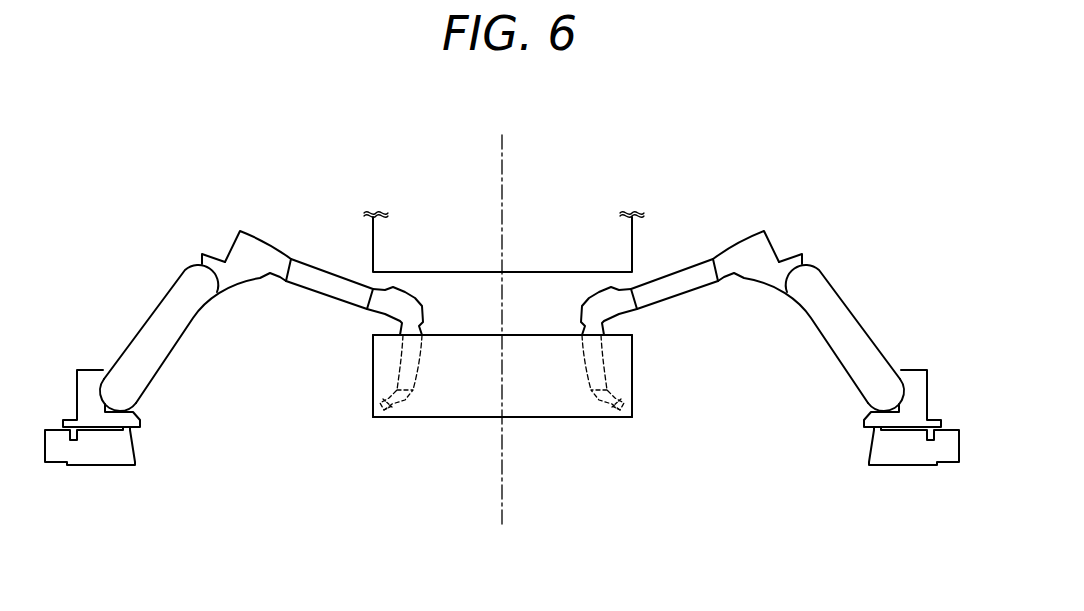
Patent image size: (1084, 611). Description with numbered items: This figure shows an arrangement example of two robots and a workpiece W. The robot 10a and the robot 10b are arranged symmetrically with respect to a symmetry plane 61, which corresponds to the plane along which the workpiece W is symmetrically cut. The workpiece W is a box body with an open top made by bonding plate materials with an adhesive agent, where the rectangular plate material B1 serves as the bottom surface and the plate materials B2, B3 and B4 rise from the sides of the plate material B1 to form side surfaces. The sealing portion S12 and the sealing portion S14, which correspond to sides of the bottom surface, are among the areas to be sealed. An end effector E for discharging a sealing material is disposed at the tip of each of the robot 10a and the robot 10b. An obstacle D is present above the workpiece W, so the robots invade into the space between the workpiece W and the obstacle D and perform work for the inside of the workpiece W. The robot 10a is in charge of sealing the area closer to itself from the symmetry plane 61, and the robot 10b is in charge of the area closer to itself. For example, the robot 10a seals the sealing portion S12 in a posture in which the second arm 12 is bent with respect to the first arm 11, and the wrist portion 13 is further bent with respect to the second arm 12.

The robot 10a is at (205, 186).
The robot 10b is at (799, 186).
The first arm 11 is at (320, 278).
The second arm 12 is at (425, 348).
The wrist portion 13 is at (407, 397).
The symmetry plane 61 is at (504, 170).
The obstacle D is at (517, 273).
The workpiece W is at (499, 407).
The plate material B1 is at (477, 421).
The plate material B2 is at (372, 374).
The plate material B3 is at (492, 362).
The plate material B4 is at (633, 375).
The sealing portion S12 is at (370, 421).
The sealing portion S14 is at (633, 418).
The end effector E is at (501, 442).